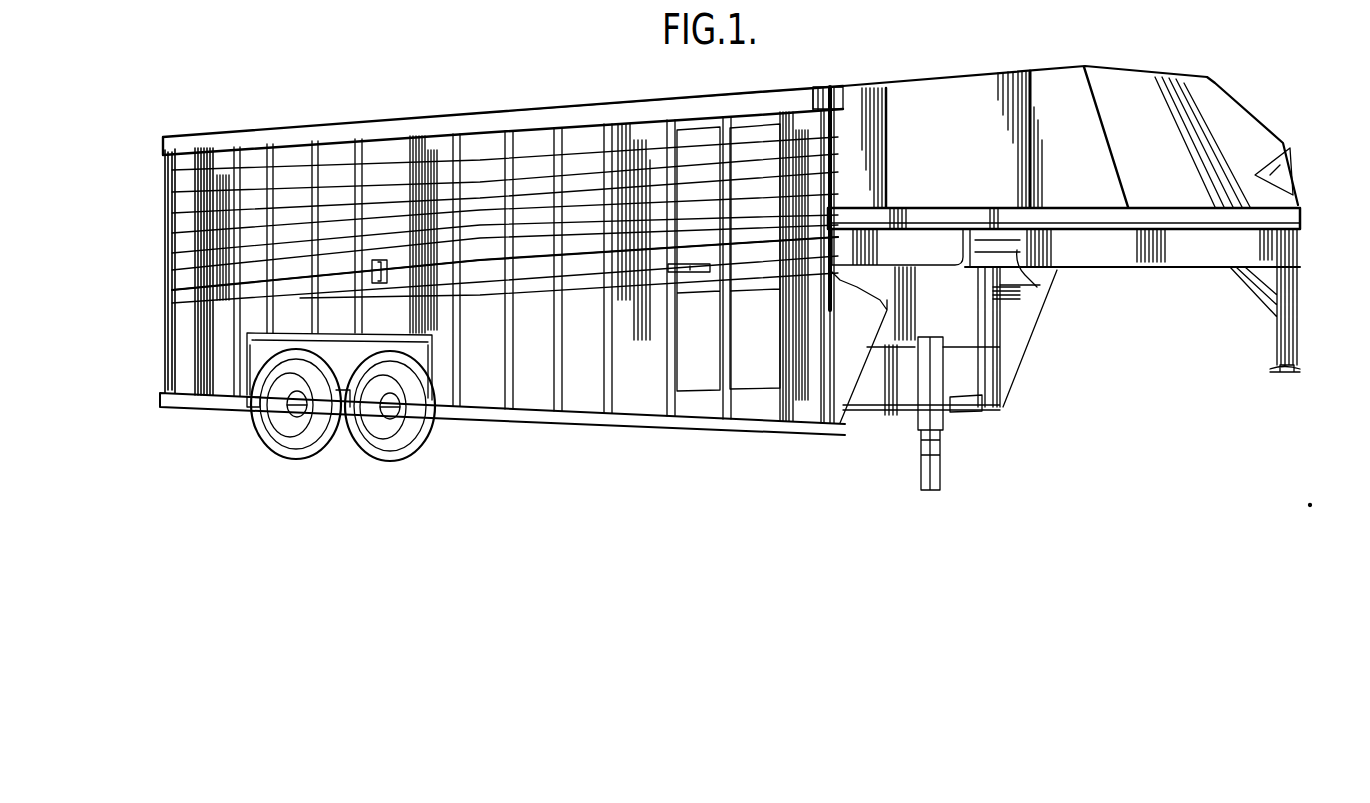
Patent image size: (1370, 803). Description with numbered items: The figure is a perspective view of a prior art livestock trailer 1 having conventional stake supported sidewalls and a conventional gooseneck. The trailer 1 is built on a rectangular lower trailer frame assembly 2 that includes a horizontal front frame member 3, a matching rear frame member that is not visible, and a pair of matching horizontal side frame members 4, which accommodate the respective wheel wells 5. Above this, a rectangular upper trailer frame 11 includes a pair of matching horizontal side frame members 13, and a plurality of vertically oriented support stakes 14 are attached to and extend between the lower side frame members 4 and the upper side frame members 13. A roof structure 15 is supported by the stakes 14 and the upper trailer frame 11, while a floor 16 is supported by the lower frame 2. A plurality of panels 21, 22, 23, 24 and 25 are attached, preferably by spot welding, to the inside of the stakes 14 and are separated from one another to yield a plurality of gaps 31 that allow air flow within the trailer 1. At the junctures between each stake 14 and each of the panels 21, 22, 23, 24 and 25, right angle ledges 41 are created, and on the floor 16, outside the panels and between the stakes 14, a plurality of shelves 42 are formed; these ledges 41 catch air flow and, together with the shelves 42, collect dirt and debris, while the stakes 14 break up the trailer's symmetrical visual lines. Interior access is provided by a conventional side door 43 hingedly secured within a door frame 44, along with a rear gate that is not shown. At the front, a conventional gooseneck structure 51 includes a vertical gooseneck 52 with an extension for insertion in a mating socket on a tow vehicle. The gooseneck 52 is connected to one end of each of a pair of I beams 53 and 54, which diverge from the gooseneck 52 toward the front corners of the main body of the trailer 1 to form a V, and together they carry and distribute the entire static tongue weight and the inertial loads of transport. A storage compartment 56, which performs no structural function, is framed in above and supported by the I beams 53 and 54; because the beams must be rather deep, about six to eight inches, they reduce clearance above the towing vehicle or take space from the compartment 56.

The livestock trailer 1 is at (857, 45).
The lower trailer frame assembly 2 is at (649, 443).
The horizontal front frame member 3 is at (903, 412).
The horizontal side frame members 4 is at (517, 418).
The wheel wells 5 is at (250, 407).
The upper trailer frame 11 is at (439, 99).
The horizontal side frame members 13 is at (513, 122).
The support stakes 14 is at (245, 160).
The roof structure 15 is at (313, 117).
The floor 16 is at (977, 412).
The panel 21 is at (190, 348).
The panel 22 is at (186, 279).
The panel 23 is at (191, 229).
The panel 24 is at (191, 190).
The panel 25 is at (191, 168).
The gaps 31 is at (190, 165).
The right angle ledges 41 is at (565, 365).
The shelves 42 is at (462, 428).
The side door 43 is at (753, 370).
The door frame 44 is at (812, 88).
The gooseneck structure 51 is at (1328, 218).
The vertical gooseneck 52 is at (1298, 310).
The I beam 53 is at (1183, 253).
The I beam 54 is at (1037, 287).
The storage compartment 56 is at (1165, 115).